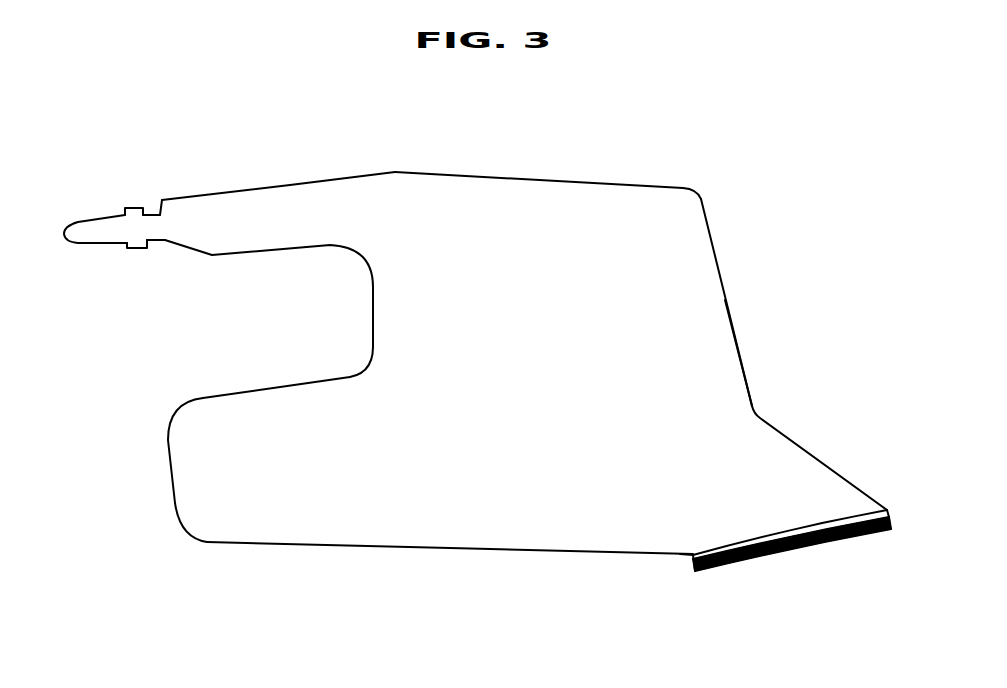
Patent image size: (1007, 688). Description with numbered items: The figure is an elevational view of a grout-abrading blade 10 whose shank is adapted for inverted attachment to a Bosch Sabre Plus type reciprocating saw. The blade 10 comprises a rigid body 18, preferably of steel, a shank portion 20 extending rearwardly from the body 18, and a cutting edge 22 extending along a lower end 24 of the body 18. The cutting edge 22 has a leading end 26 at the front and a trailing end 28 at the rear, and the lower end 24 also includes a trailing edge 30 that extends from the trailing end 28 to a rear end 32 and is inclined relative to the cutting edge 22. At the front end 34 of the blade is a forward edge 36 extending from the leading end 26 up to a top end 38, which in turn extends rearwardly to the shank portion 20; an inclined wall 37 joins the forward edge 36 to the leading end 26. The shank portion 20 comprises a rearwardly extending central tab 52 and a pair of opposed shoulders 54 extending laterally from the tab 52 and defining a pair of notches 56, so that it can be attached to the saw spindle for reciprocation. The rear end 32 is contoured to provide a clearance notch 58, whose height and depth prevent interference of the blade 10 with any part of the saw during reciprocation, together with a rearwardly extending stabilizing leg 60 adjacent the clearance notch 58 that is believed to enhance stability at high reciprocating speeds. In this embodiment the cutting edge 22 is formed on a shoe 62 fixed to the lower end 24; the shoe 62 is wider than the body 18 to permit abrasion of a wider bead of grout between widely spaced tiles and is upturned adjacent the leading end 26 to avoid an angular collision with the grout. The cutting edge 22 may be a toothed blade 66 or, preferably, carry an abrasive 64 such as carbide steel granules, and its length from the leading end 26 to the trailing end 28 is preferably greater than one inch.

The blade 10 is at (552, 148).
The rigid body 18 is at (672, 252).
The shank portion 20 is at (208, 207).
The cutting edge 22 is at (799, 558).
The lower end 24 is at (464, 556).
The leading end 26 is at (896, 529).
The trailing end 28 is at (686, 556).
The trailing edge 30 is at (357, 544).
The rear end 32 is at (175, 503).
The front end 34 is at (746, 365).
The forward edge 36 is at (730, 297).
The inclined wall 37 is at (804, 440).
The top end 38 is at (616, 184).
The central tab 52 is at (80, 226).
The shoulders 54 is at (125, 209).
The notches 56 is at (147, 212).
The clearance notch 58 is at (260, 319).
The stabilizing leg 60 is at (197, 466).
The shoe 62 is at (758, 545).
The abrasive granules 64 is at (737, 569).
The toothed blade 66 is at (850, 544).